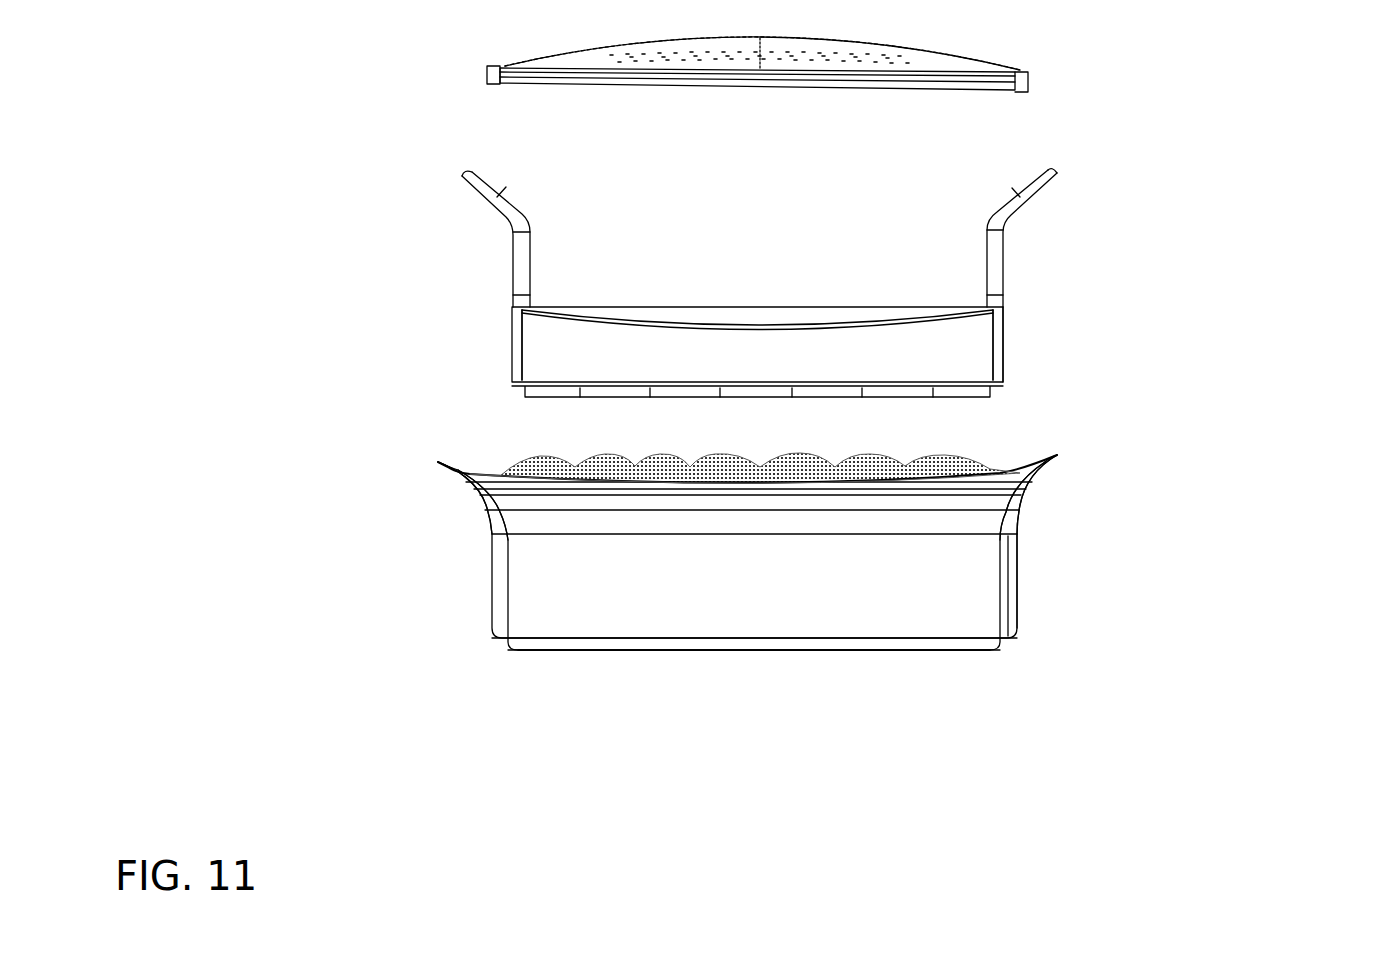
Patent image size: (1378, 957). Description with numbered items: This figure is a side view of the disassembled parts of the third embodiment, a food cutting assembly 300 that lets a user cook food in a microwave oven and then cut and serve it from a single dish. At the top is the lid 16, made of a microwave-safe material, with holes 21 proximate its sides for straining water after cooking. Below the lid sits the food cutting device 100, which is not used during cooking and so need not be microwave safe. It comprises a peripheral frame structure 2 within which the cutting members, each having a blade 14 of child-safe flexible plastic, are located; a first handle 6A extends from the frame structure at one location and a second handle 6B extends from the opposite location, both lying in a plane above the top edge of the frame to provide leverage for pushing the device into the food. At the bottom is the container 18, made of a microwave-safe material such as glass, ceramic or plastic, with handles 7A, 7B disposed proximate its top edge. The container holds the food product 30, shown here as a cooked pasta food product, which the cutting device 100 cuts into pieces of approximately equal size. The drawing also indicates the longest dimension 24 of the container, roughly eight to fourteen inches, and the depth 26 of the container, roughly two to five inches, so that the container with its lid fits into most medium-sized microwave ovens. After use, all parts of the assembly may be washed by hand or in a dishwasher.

The food cutting assembly 300 is at (1352, 76).
The lid 16 is at (408, 59).
The holes 21 is at (805, 56).
The food cutting device 100 is at (679, 274).
The first handle 6A is at (462, 175).
The second handle 6B is at (1050, 171).
The blade 14 is at (495, 302).
The peripheral frame structure 2 is at (1003, 347).
The container 18 is at (727, 543).
The handle 7A is at (436, 462).
The handle 7B is at (1057, 455).
The food product 30 is at (910, 458).
The depth 26 is at (1043, 530).
The longest dimension 24 is at (513, 672).